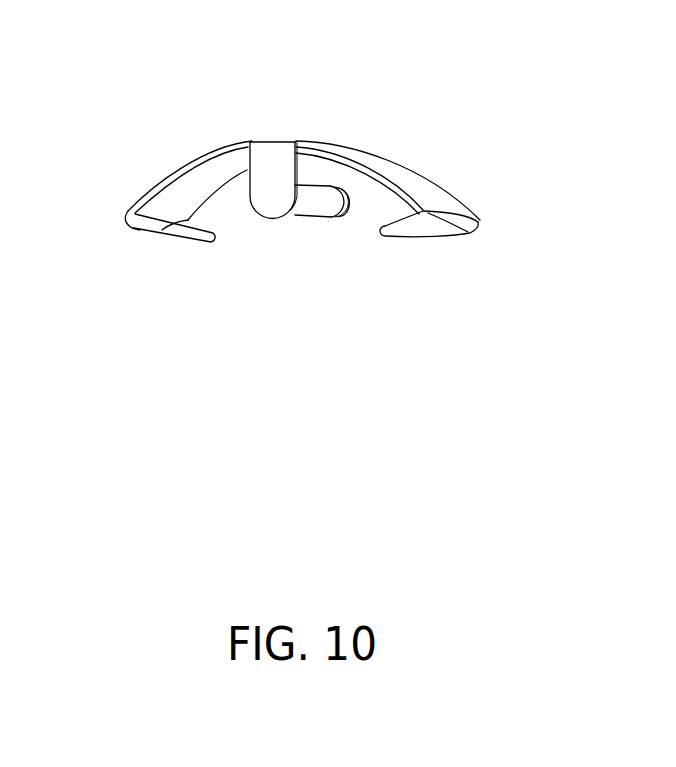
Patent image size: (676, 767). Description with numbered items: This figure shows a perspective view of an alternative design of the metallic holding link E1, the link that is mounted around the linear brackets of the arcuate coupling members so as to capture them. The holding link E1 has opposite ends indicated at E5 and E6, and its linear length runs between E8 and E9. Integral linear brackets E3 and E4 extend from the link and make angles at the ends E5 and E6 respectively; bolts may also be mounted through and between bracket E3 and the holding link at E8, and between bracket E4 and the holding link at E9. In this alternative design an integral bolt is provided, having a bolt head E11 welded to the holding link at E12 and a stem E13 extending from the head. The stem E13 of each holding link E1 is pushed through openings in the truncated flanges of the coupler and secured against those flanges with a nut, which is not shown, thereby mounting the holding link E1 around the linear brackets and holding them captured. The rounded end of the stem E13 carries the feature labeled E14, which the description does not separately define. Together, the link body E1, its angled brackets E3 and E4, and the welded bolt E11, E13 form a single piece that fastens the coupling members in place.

The holding link E1 is at (413, 178).
The integral linear bracket E3 is at (165, 238).
The integral linear bracket E4 is at (392, 237).
The end of holding link E5 is at (126, 210).
The end of holding link E6 is at (423, 212).
The holding link linear portion end E8 is at (190, 157).
The holding link linear portion end E9 is at (455, 188).
The welded bolt head E11 is at (270, 173).
The weld location E12 is at (270, 139).
The bolt stem E13 is at (315, 198).
The pin end E14 is at (349, 200).